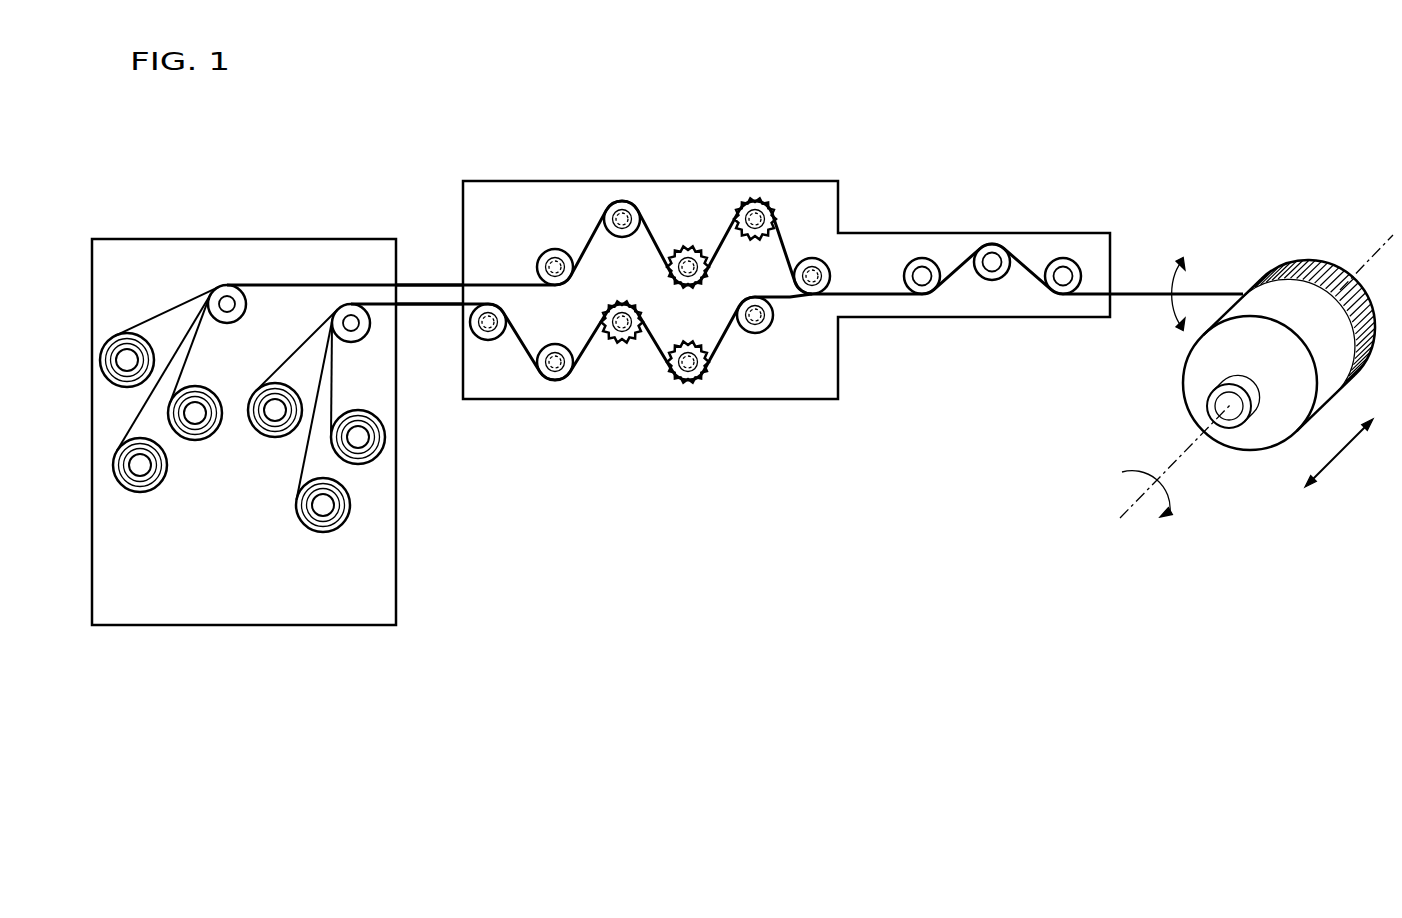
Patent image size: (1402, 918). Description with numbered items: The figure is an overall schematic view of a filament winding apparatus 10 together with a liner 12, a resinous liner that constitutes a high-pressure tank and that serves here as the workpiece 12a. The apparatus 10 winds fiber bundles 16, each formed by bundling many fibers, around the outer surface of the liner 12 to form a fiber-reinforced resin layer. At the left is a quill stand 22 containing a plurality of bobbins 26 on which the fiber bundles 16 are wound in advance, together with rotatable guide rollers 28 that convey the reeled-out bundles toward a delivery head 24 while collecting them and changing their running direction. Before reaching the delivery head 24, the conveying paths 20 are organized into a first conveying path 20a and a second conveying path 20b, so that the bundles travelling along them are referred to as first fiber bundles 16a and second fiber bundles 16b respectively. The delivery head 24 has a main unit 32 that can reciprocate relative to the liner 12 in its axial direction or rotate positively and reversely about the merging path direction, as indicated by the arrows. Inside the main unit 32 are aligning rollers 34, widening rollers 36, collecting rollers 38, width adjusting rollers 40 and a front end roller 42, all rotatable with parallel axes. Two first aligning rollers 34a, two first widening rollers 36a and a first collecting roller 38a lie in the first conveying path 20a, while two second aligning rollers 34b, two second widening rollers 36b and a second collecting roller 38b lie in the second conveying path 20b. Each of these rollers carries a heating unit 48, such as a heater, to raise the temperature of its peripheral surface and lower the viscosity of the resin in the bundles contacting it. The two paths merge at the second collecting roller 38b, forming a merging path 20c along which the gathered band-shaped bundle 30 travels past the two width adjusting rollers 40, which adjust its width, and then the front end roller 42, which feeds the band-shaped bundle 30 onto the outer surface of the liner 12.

The filament winding apparatus 10 is at (1153, 109).
The liner 12 is at (1256, 352).
The workpiece 12a is at (1285, 265).
The fiber bundles 16 is at (149, 318).
The first fiber bundles 16a is at (434, 306).
The second fiber bundles 16b is at (438, 284).
The conveying paths 20 is at (307, 281).
The first conveying path 20a is at (415, 308).
The second conveying path 20b is at (421, 282).
The merging path 20c is at (856, 291).
The quill stand 22 is at (126, 237).
The delivery head 24 is at (492, 168).
The bobbins 26 is at (140, 492).
The guide rollers 28 is at (228, 321).
The band-shaped bundle 30 is at (885, 294).
The main unit 32 is at (827, 378).
The aligning rollers 34 is at (554, 314).
The first aligning rollers 34a is at (545, 378).
The second aligning rollers 34b is at (613, 233).
The widening rollers 36 is at (688, 314).
The first widening rollers 36a is at (677, 378).
The second widening rollers 36b is at (700, 250).
The collecting rollers 38 is at (811, 290).
The first collecting roller 38a is at (777, 313).
The second collecting roller 38b is at (815, 258).
The width adjusting rollers 40 is at (978, 272).
The front end roller 42 is at (1063, 258).
The heating units 48 is at (555, 267).